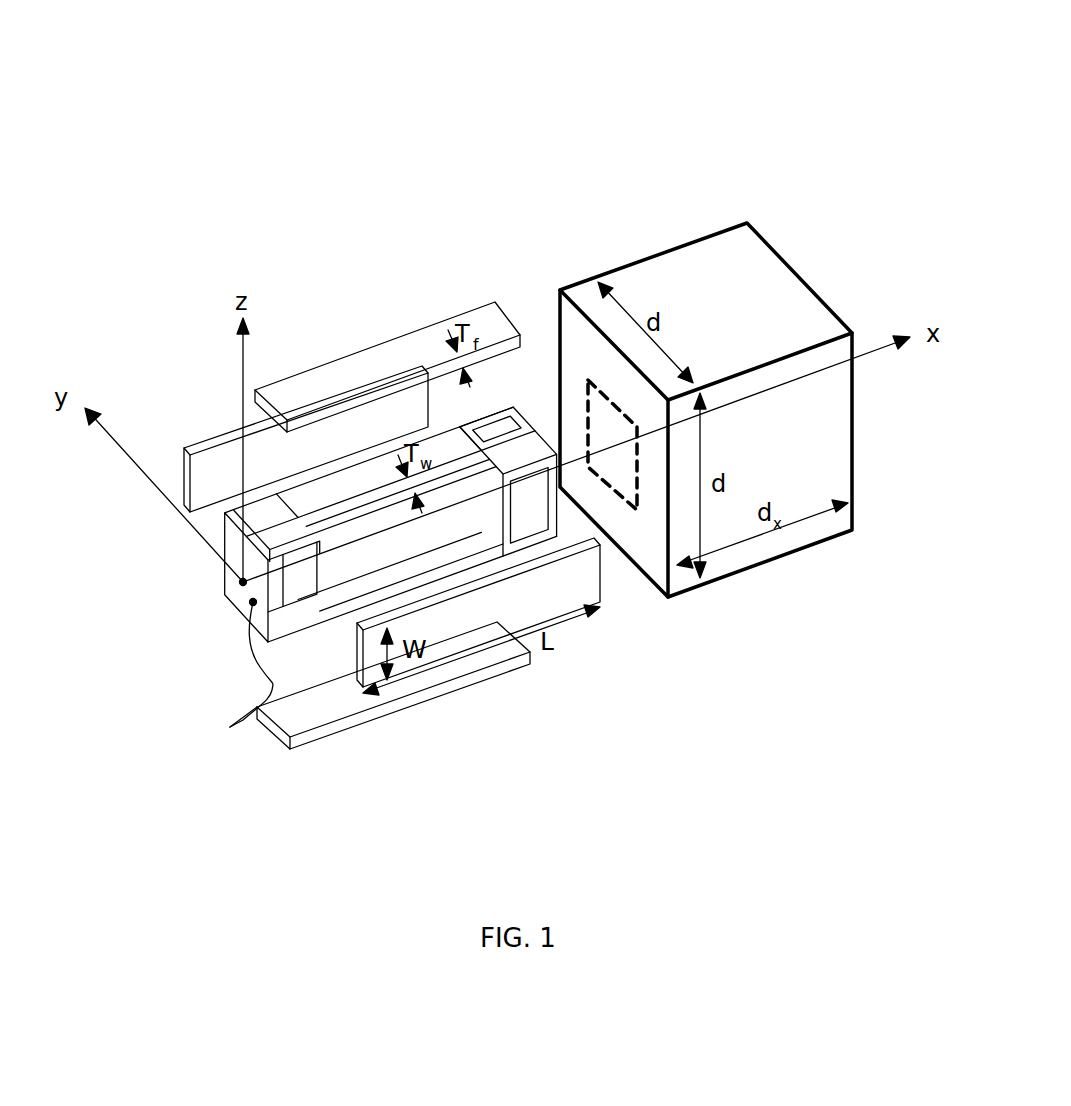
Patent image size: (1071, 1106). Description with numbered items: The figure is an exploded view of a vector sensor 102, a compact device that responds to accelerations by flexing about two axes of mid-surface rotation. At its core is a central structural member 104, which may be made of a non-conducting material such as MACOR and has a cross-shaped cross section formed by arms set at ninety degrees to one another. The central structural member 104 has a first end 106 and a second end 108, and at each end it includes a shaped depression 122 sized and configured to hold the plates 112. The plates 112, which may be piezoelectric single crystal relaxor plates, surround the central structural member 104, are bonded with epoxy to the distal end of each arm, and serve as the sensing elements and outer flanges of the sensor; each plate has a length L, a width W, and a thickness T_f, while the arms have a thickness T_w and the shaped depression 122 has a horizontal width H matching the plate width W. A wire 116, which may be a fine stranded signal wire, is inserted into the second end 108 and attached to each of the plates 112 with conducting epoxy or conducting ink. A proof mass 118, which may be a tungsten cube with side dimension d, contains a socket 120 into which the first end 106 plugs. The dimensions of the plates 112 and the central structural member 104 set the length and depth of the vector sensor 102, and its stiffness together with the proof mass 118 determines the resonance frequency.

The vector sensor 102 is at (698, 88).
The central structural member 104 is at (236, 582).
The first end 106 is at (537, 410).
The second end 108 is at (237, 648).
The plates 112 is at (348, 372).
The wire 116 is at (290, 670).
The proof mass 118 is at (737, 270).
The socket 120 is at (625, 447).
The shaped depression 122 is at (487, 450).